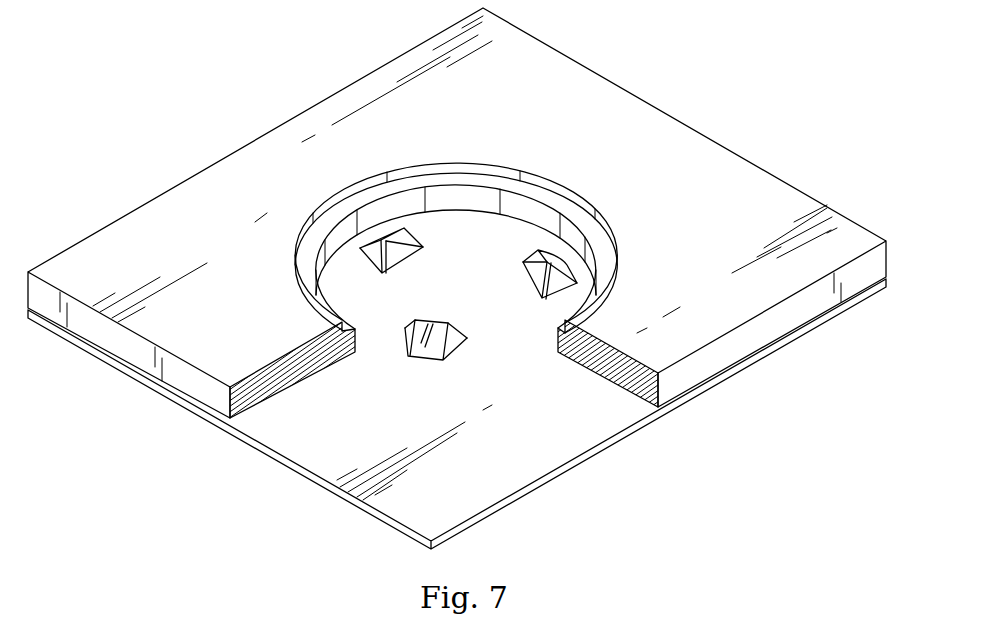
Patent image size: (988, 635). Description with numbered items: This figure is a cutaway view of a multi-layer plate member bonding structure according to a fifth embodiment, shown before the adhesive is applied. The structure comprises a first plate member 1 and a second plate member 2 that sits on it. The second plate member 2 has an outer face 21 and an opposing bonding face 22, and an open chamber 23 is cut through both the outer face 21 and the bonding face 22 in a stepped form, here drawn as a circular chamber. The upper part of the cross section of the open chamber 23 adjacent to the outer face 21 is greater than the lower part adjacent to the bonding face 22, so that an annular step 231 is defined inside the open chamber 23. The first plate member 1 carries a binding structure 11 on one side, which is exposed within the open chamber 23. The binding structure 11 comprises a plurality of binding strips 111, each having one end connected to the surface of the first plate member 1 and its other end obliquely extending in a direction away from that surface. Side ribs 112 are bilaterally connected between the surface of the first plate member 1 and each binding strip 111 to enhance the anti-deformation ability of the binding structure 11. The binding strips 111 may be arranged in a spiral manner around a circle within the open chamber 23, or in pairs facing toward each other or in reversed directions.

The first plate member 1 is at (567, 467).
The second plate member 2 is at (789, 182).
The binding structure 11 is at (386, 372).
The binding strip 111 is at (386, 242).
The side rib 112 is at (372, 252).
The outer face 21 is at (617, 347).
The bonding face 22 is at (612, 380).
The open chamber 23 is at (580, 257).
The annular step 231 is at (541, 193).